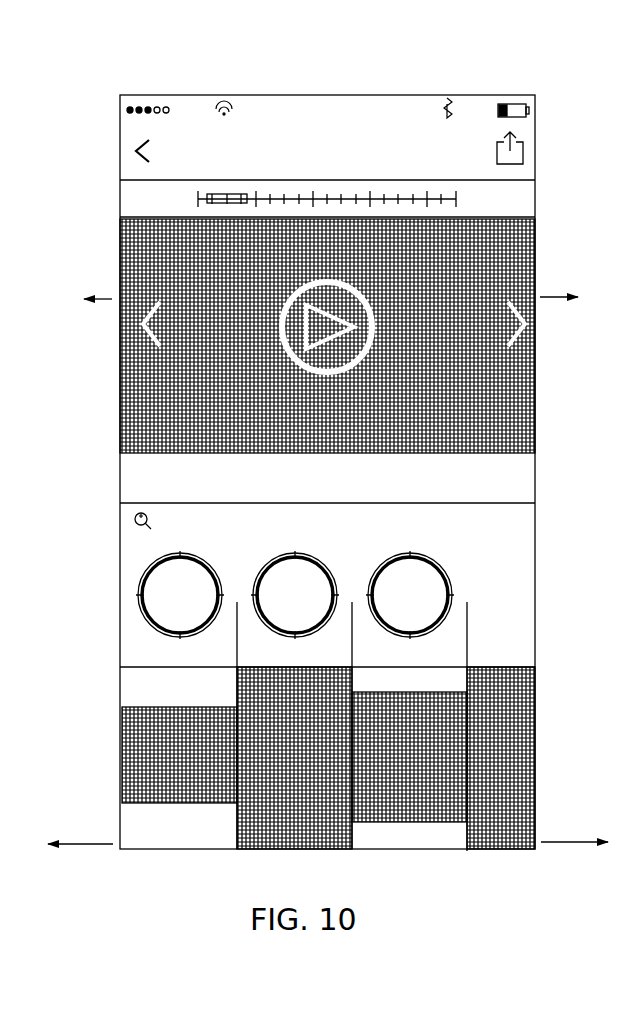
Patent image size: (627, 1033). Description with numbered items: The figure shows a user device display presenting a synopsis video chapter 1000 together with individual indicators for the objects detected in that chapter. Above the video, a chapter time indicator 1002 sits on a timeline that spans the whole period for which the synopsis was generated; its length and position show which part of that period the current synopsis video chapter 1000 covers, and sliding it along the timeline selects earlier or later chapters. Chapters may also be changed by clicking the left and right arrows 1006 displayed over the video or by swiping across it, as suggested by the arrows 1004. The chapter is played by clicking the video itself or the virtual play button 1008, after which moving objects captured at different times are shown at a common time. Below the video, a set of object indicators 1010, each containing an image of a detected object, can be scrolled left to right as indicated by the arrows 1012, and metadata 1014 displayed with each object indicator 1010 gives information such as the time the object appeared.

The synopsis video chapter 1000 is at (538, 267).
The chapter time indicator 1002 is at (225, 204).
The arrows 1004 is at (100, 300).
The left and right arrows 1006 is at (533, 348).
The virtual play button 1008 is at (286, 334).
The object indicators 1010 is at (137, 731).
The arrows 1012 is at (84, 846).
The metadata 1014 is at (140, 597).